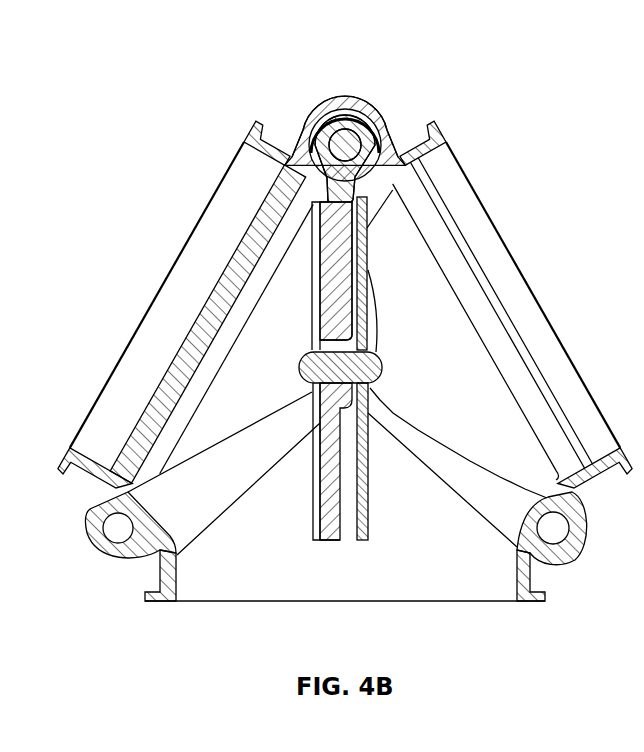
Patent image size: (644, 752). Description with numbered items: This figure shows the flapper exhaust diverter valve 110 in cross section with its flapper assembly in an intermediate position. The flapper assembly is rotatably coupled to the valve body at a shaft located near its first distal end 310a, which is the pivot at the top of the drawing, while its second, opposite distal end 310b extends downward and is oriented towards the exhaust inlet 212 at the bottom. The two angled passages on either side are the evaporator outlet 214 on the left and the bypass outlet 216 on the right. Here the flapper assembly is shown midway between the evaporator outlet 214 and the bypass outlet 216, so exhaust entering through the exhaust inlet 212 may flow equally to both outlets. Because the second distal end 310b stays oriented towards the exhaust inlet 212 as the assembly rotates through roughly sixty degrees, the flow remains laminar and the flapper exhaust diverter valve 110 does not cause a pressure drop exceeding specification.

The flapper exhaust diverter valve 110 is at (224, 93).
The exhaust inlet 212 is at (438, 603).
The evaporator outlet 214 is at (156, 297).
The bypass outlet 216 is at (535, 297).
The first distal end 310a is at (368, 112).
The second distal end 310b is at (342, 541).